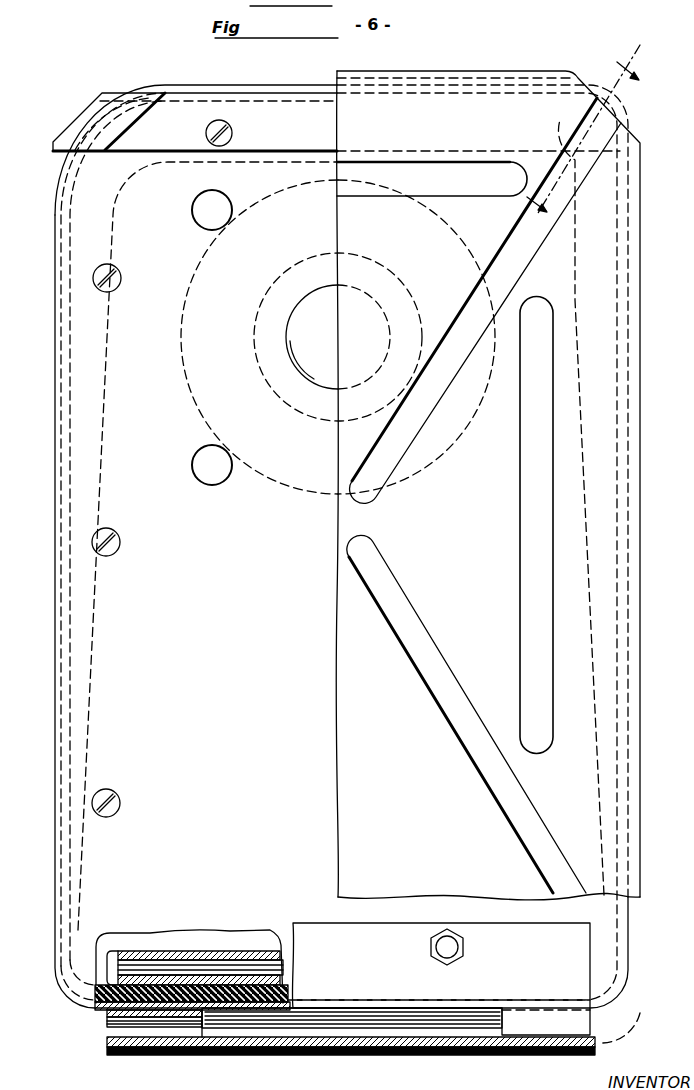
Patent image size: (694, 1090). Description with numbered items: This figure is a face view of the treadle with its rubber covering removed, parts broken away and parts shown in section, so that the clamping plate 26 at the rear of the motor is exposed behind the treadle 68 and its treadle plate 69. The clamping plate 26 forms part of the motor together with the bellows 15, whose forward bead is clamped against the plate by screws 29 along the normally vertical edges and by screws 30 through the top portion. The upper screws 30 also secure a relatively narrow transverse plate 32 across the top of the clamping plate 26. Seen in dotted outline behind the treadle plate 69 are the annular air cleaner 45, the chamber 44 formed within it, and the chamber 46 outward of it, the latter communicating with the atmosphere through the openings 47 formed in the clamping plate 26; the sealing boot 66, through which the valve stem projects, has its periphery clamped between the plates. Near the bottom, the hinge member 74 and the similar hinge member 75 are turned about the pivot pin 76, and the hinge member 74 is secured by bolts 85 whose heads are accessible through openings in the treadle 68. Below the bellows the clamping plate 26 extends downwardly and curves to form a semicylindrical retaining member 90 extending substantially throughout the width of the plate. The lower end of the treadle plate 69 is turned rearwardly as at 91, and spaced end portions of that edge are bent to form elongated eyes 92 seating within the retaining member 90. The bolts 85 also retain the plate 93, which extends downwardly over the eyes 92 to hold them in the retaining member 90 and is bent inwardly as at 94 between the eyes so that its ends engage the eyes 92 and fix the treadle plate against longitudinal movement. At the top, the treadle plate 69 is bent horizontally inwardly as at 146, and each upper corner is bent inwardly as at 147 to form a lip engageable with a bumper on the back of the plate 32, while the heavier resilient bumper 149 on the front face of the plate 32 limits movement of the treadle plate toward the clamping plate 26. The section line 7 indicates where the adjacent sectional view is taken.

The section line 7- 7 is at (586, 132).
The bellows 15 is at (60, 553).
The clamping plate 26 is at (244, 557).
The screws 29 is at (121, 278).
The screws 30 is at (227, 135).
The transverse plate 32 is at (302, 101).
The chamber 44 is at (391, 355).
The air cleaner 45 is at (182, 351).
The chamber 46 is at (459, 218).
The openings 47 is at (192, 210).
The sealing boot 66 is at (333, 323).
The treadle 68 is at (352, 695).
The treadle plate 69 is at (472, 486).
The hinge member 74 is at (157, 950).
The hinge member 75 is at (218, 950).
The pivot pin 76 is at (283, 968).
The bolts 85 is at (430, 948).
The retaining member 90 is at (235, 1056).
The rearwardly turned edge 91 is at (107, 1042).
The eyes 92 is at (107, 1021).
The plate 93 is at (512, 932).
The inwardly bent portion 94 is at (387, 1021).
The inwardly bent top portion 146 is at (531, 78).
The inwardly bent corner portion 147 is at (582, 98).
The resilient bumper 149 is at (113, 103).